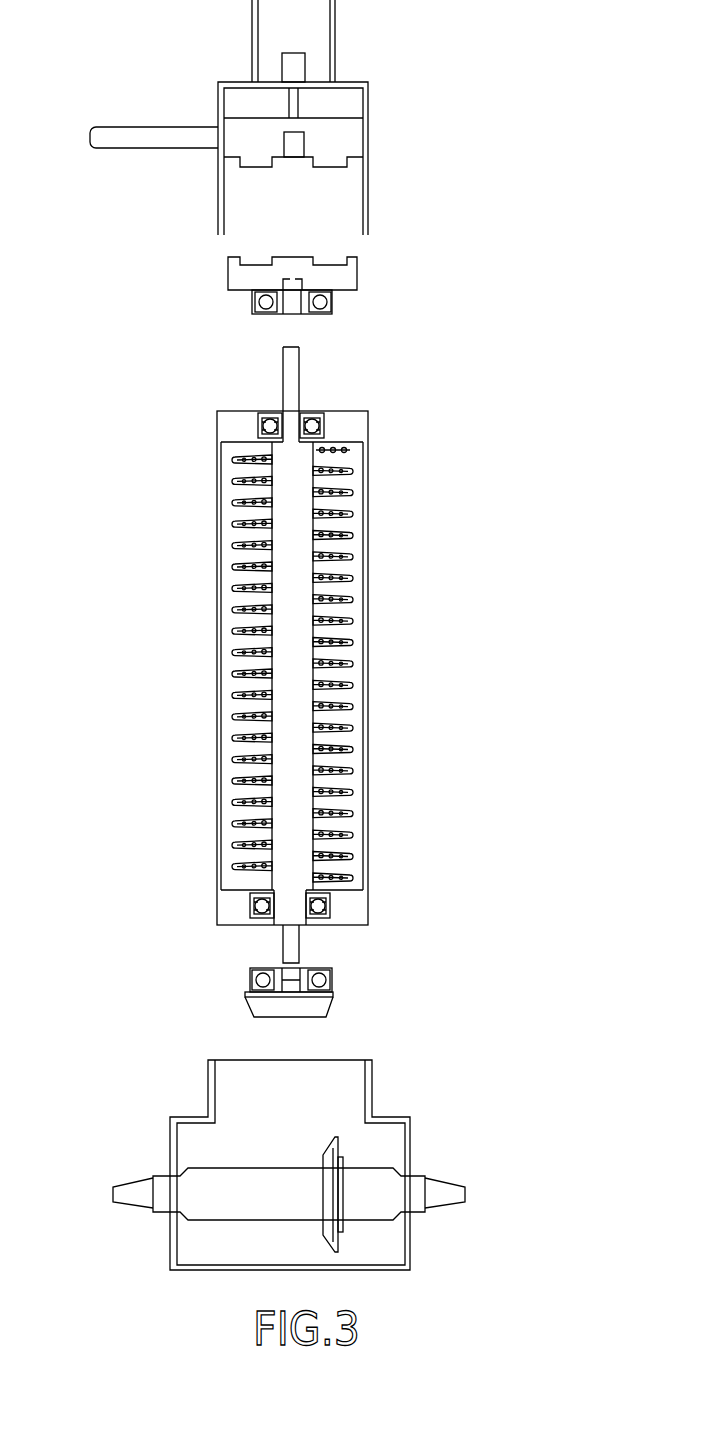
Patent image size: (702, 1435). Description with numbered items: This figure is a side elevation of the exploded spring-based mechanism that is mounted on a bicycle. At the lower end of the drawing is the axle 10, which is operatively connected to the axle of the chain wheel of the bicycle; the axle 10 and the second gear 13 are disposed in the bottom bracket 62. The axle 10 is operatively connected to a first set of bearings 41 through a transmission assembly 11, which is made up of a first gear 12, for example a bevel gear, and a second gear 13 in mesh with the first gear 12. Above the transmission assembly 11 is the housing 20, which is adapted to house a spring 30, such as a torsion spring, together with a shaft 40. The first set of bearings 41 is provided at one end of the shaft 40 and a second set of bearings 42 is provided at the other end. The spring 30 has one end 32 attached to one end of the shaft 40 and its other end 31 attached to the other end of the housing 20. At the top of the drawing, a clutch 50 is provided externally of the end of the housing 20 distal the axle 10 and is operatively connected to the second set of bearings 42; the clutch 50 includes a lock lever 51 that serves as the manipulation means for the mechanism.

The axle 10 is at (373, 1190).
The transmission assembly 11 is at (142, 982).
The first gear 12 is at (328, 1152).
The second gear 13 is at (258, 1005).
The housing 20 is at (362, 782).
The spring 30 is at (350, 687).
The other end of the spring 31 is at (352, 440).
The one end of the spring 32 is at (318, 879).
The shaft 40 is at (295, 622).
The first set of bearings 41 is at (330, 980).
The second set of bearings 42 is at (333, 302).
The clutch 50 is at (370, 148).
The lock lever 51 is at (137, 137).
The bottom bracket 62 is at (408, 1233).